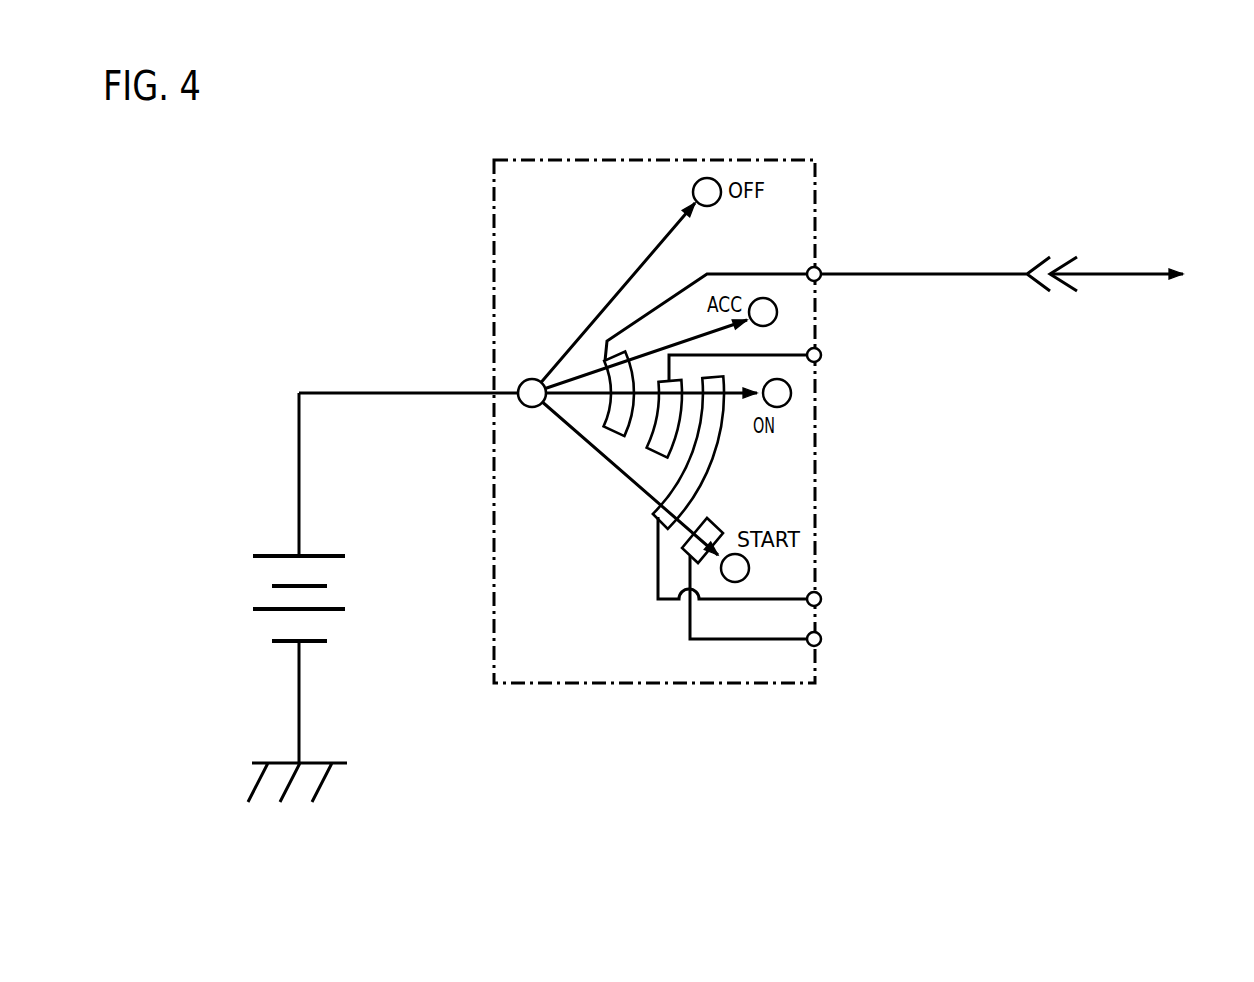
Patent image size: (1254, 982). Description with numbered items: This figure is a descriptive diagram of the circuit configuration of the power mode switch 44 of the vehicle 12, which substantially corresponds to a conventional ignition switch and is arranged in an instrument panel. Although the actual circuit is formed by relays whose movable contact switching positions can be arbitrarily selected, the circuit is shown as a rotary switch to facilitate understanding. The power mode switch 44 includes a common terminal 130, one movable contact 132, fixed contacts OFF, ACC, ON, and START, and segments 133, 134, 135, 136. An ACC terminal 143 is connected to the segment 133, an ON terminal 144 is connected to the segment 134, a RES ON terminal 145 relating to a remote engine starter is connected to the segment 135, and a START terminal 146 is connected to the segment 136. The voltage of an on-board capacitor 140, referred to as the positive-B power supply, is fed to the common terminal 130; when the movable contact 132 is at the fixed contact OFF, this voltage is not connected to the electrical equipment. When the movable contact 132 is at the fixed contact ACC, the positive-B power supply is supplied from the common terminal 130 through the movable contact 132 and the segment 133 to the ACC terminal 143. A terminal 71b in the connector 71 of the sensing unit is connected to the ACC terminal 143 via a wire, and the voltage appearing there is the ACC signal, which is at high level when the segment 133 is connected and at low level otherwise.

The vehicle 12 is at (420, 147).
The power mode switch 44 is at (633, 160).
The connector 71 is at (1067, 222).
The terminal 71b is at (1058, 290).
The common terminal 130 is at (520, 384).
The movable contact 132 is at (597, 315).
The segment 133 is at (598, 445).
The segment 134 is at (658, 458).
The segment 135 is at (652, 515).
The segment 136 is at (680, 550).
The on-board capacitor 140 is at (265, 570).
The ACC terminal 143 is at (820, 269).
The ON terminal 144 is at (820, 360).
The RES ON terminal 145 is at (822, 598).
The START terminal 146 is at (822, 637).